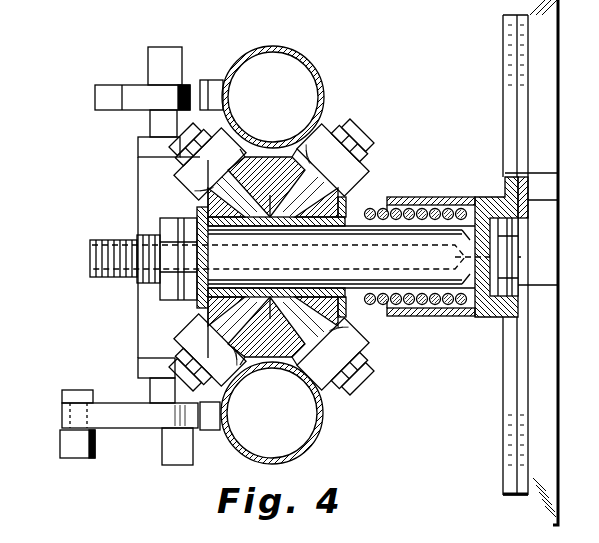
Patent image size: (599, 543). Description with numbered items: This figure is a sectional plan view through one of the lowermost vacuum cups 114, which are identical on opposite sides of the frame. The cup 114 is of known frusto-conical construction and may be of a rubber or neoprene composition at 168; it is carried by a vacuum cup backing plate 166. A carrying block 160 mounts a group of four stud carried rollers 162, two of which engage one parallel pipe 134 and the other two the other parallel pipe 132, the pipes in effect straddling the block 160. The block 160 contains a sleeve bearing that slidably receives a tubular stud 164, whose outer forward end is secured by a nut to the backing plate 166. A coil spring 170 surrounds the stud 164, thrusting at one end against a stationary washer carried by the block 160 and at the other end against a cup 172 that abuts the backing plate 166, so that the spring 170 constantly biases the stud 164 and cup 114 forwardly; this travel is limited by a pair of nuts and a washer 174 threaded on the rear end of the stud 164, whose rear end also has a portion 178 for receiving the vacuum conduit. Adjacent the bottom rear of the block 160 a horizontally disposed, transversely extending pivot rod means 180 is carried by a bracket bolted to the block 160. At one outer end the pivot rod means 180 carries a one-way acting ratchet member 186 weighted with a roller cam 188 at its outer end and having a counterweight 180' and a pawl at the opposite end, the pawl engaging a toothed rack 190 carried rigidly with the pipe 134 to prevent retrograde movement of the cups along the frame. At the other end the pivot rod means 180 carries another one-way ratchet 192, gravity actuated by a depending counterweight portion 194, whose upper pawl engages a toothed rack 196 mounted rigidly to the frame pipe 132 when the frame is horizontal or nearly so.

The vacuum cup 114 is at (548, 508).
The parallel pipe 132 is at (318, 70).
The parallel pipe 134 is at (322, 420).
The carrying block 160 is at (326, 128).
The stud carried roller 162 is at (352, 180).
The tubular stud 164 is at (366, 300).
The vacuum cup backing plate 166 is at (506, 187).
The rubber or neoprene composition 168 is at (528, 200).
The coil spring 170 is at (441, 197).
The cup 172 is at (440, 200).
The nuts and washer 174 is at (162, 296).
The second portion of stud rear end 178 is at (108, 240).
The pivot rod means 180 is at (135, 256).
The counterweight 180' is at (156, 463).
The one-way acting ratchet member 186 is at (143, 428).
The roller cam 188 is at (60, 443).
The toothed rack 190 is at (208, 432).
The one-way ratchet 192 is at (133, 85).
The depending counterweight portion 194 is at (165, 47).
The toothed rack 196 is at (222, 82).